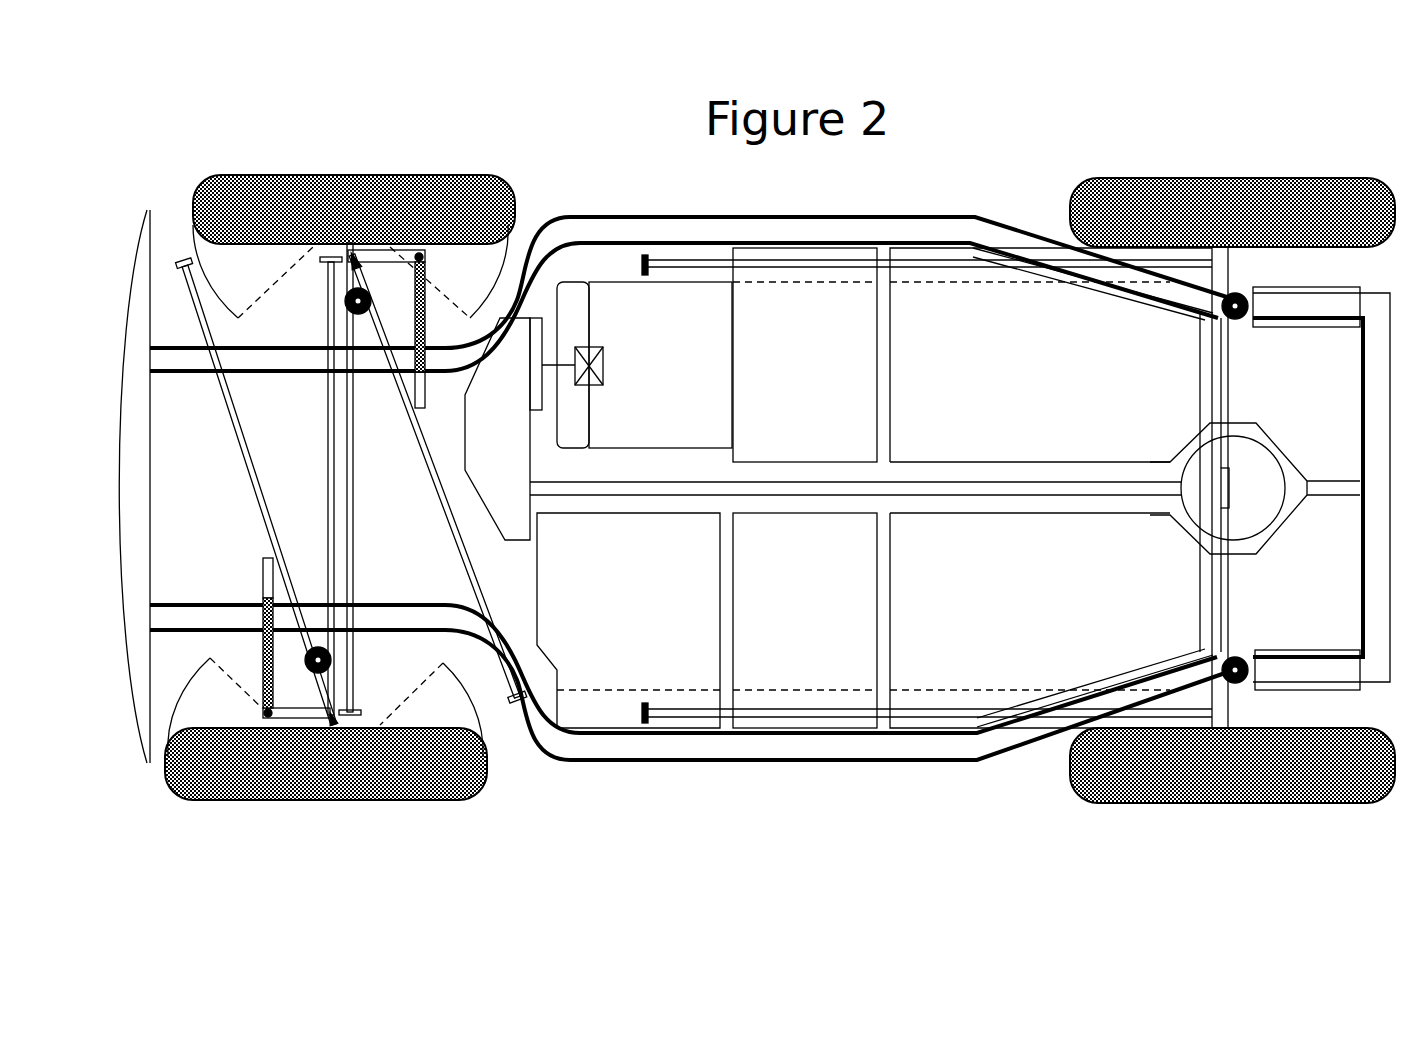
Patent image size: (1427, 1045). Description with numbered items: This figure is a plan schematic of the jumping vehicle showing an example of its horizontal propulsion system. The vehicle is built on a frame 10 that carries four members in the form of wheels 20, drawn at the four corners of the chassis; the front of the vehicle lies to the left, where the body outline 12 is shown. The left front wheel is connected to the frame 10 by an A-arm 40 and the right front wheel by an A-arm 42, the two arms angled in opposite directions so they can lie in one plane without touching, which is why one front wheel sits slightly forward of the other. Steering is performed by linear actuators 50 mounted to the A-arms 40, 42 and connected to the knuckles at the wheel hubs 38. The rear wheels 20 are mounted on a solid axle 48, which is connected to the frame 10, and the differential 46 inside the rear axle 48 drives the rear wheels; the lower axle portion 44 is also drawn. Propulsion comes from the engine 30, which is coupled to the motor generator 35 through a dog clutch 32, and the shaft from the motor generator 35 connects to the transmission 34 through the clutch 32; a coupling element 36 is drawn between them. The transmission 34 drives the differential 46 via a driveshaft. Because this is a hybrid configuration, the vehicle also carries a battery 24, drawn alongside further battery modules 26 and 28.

The frame 10 is at (917, 217).
The vehicle body front 12 is at (134, 486).
The wheels 20 is at (237, 178).
The battery 24 is at (628, 620).
The battery module 26 is at (805, 488).
The battery module 28 is at (1051, 488).
The engine 30 is at (660, 365).
The dog clutch 32 is at (537, 357).
The transmission 34 is at (497, 429).
The motor generator 35 is at (575, 305).
The valve 36 is at (592, 365).
The wheel hub 38 is at (347, 303).
The A-arm 40 is at (255, 495).
The A-arm 42 is at (465, 568).
The rear axle lower arm 44 is at (1240, 600).
The differential 46 is at (1268, 527).
The solid axle 48 is at (1240, 397).
The linear actuators 50 is at (413, 398).